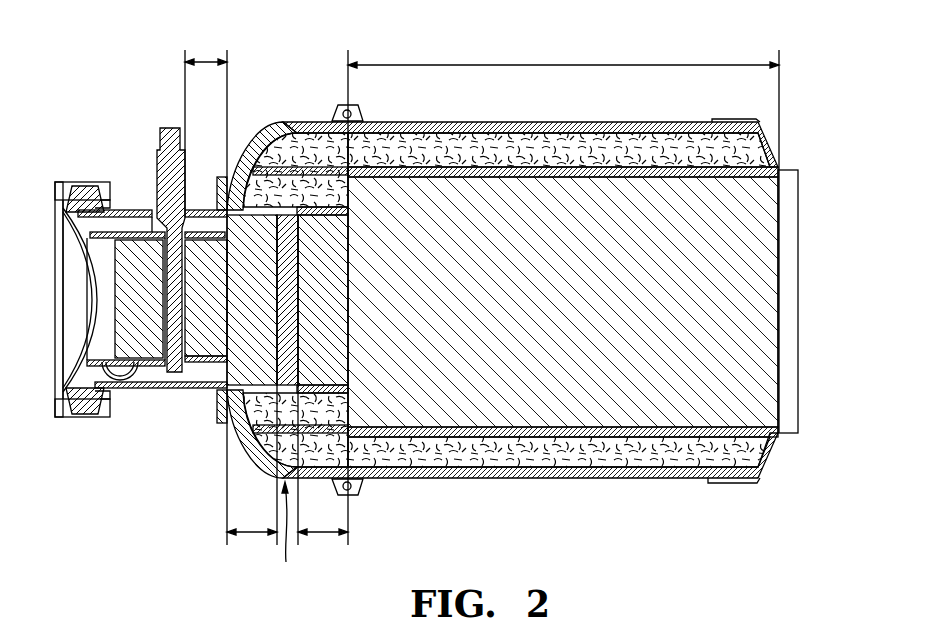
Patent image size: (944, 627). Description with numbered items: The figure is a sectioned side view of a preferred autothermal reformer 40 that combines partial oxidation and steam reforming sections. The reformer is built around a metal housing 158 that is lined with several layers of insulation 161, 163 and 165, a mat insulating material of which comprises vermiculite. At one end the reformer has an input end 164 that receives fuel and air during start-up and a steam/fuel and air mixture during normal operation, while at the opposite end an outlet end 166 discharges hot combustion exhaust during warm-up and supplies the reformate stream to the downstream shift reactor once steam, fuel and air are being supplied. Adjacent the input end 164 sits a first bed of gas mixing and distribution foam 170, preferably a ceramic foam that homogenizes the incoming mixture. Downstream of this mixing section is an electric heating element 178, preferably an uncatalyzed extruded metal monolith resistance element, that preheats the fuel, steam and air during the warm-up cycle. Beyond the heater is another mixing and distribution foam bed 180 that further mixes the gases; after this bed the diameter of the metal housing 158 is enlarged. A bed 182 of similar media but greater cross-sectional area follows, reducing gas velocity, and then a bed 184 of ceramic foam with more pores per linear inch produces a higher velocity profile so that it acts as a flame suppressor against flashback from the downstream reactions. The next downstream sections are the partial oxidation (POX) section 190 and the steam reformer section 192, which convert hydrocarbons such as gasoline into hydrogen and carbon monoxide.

The autothermal reformer 40 is at (108, 110).
The metal housing 158 is at (140, 390).
The insulation 161 is at (760, 177).
The insulation 163 is at (766, 158).
The input end 164 is at (53, 388).
The insulation 165 is at (748, 121).
The outlet end 166 is at (793, 300).
The first bed of gas mixing and distribution foam 170 is at (139, 247).
The electric heating element 178 is at (175, 374).
The mixing and distribution foam bed 180 is at (205, 61).
The bed 182 is at (251, 535).
The bed 184 is at (284, 534).
The partial oxidation (POX) section 190 is at (322, 535).
The steam reformer section 192 is at (563, 282).